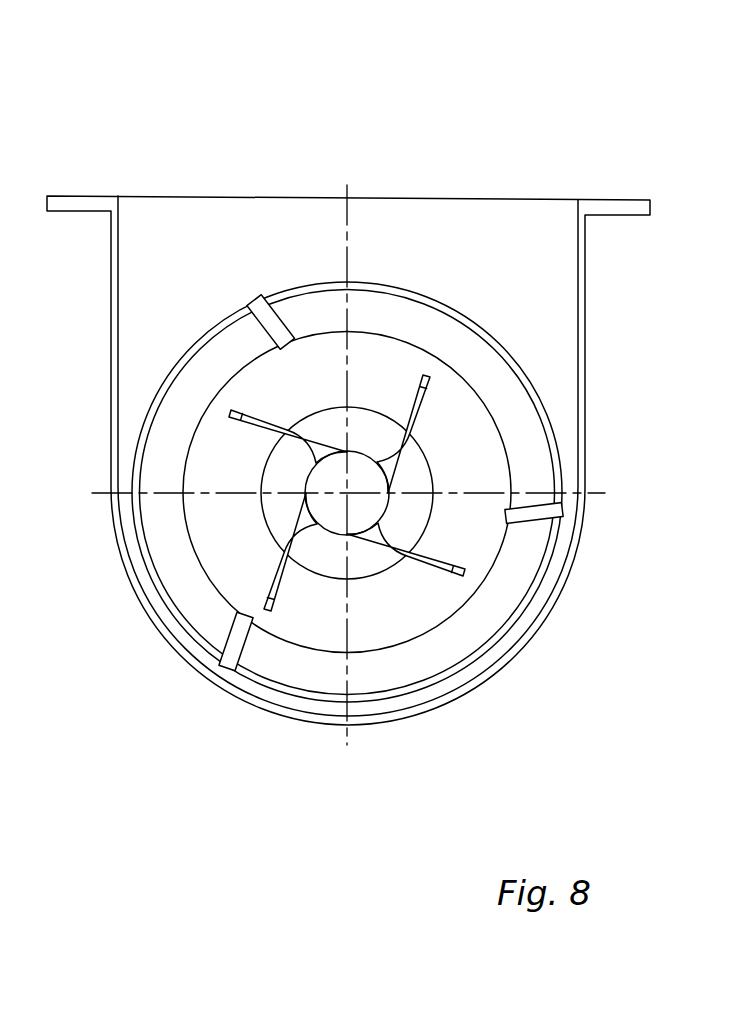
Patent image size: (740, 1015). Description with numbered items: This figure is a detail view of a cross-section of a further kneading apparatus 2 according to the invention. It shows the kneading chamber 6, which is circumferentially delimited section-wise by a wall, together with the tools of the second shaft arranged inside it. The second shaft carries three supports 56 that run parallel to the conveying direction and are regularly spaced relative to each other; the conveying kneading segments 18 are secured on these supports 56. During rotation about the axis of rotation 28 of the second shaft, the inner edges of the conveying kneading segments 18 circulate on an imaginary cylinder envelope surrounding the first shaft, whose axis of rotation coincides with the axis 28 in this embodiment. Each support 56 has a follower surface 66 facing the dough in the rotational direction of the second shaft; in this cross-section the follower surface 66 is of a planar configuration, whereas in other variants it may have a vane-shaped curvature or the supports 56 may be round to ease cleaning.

The kneading apparatus 2 is at (598, 110).
The kneading chamber 6 is at (556, 342).
The conveying kneading segments 18 is at (452, 647).
The axis of rotation of the second shaft 28 is at (344, 494).
The supports 56 is at (266, 302).
The follower surface 66 is at (241, 648).